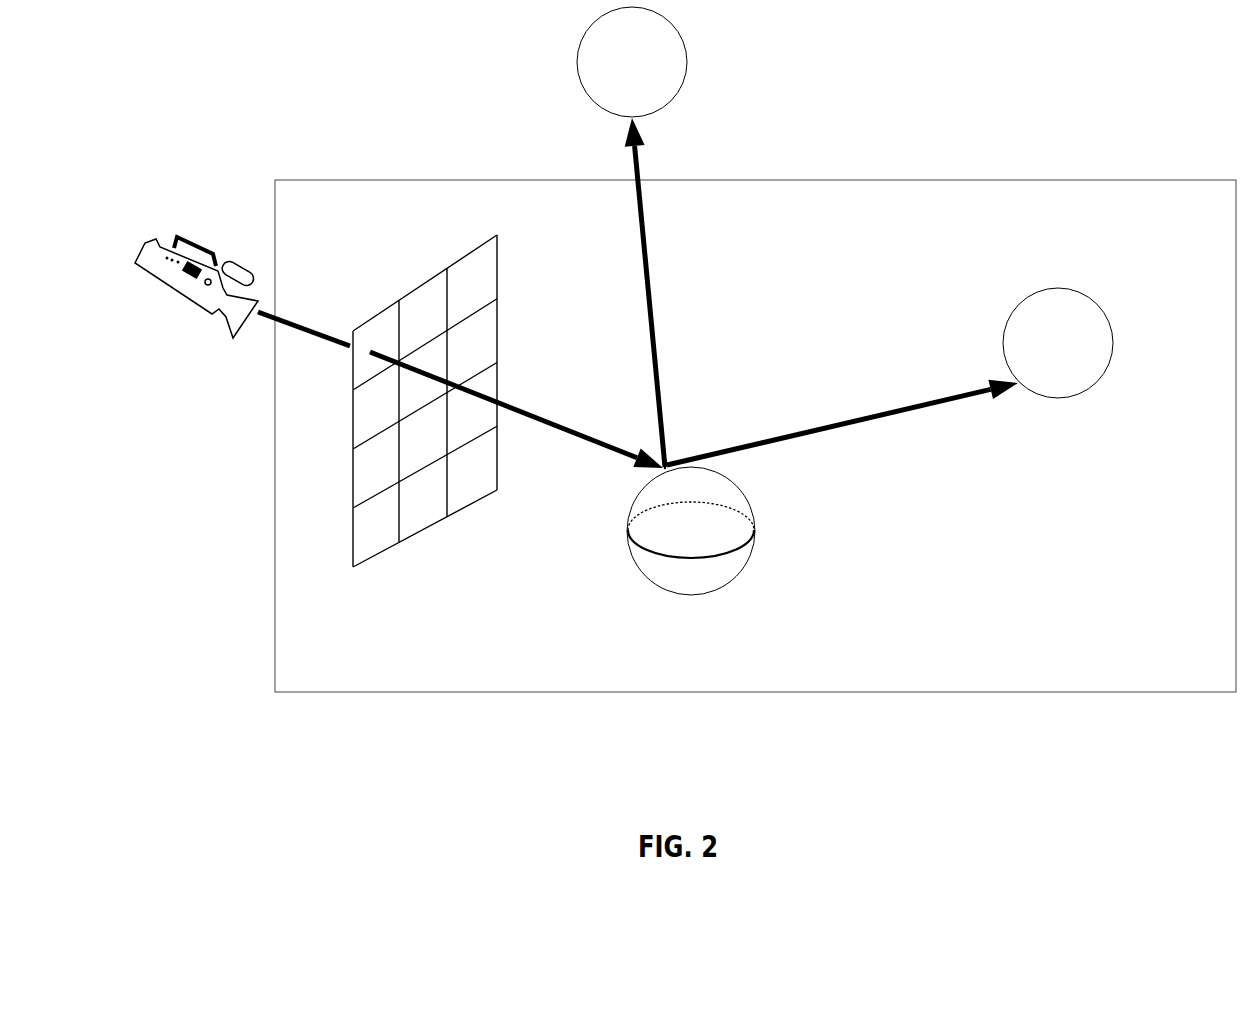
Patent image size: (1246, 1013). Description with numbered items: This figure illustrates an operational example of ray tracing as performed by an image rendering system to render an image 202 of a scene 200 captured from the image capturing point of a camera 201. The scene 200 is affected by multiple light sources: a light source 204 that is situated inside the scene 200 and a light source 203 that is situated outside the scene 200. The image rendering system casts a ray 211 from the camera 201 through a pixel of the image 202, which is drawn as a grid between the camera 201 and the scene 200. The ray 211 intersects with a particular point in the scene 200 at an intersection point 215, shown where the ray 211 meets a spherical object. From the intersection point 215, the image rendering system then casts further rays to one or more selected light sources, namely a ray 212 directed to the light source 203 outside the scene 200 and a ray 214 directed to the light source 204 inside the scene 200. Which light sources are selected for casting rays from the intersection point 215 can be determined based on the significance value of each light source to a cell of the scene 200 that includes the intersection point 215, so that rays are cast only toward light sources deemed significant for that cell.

The scene 200 is at (755, 436).
The camera 201 is at (196, 292).
The image 202 is at (425, 414).
The light source 203 is at (632, 62).
The light source 204 is at (870, 476).
The ray 211 is at (460, 390).
The ray 212 is at (652, 292).
The ray 214 is at (850, 422).
The intersection point 215 is at (678, 479).